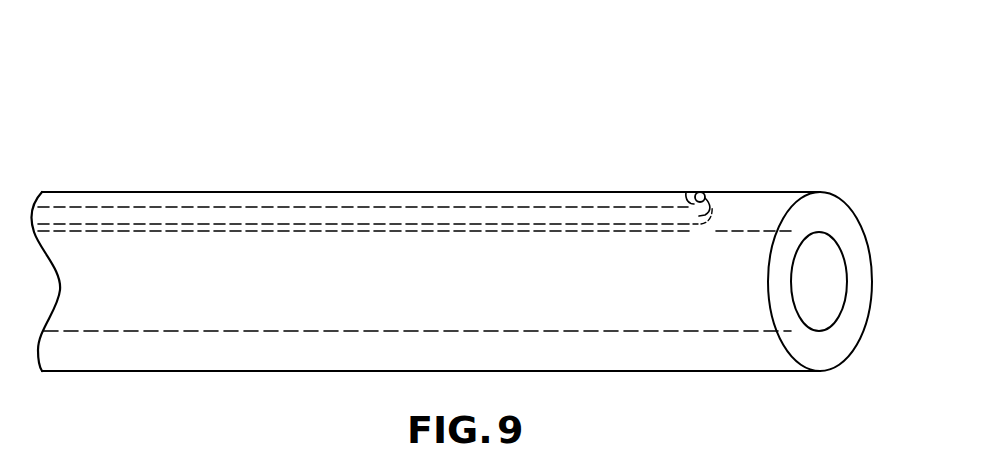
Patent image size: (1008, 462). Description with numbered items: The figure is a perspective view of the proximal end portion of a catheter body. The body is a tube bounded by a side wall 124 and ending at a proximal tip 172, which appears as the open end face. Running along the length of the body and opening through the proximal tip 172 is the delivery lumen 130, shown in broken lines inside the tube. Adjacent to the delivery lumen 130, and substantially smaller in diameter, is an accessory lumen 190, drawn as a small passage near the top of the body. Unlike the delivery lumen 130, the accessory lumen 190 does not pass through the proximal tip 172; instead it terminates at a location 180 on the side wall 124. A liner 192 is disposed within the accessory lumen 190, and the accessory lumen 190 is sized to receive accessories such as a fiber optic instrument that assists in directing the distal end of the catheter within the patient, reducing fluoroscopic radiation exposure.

The side wall 124 is at (432, 192).
The proximal tip 172 is at (856, 232).
The delivery lumen 130 is at (832, 310).
The location 180 is at (688, 203).
The accessory lumen 190 is at (698, 191).
The liner 192 is at (712, 195).